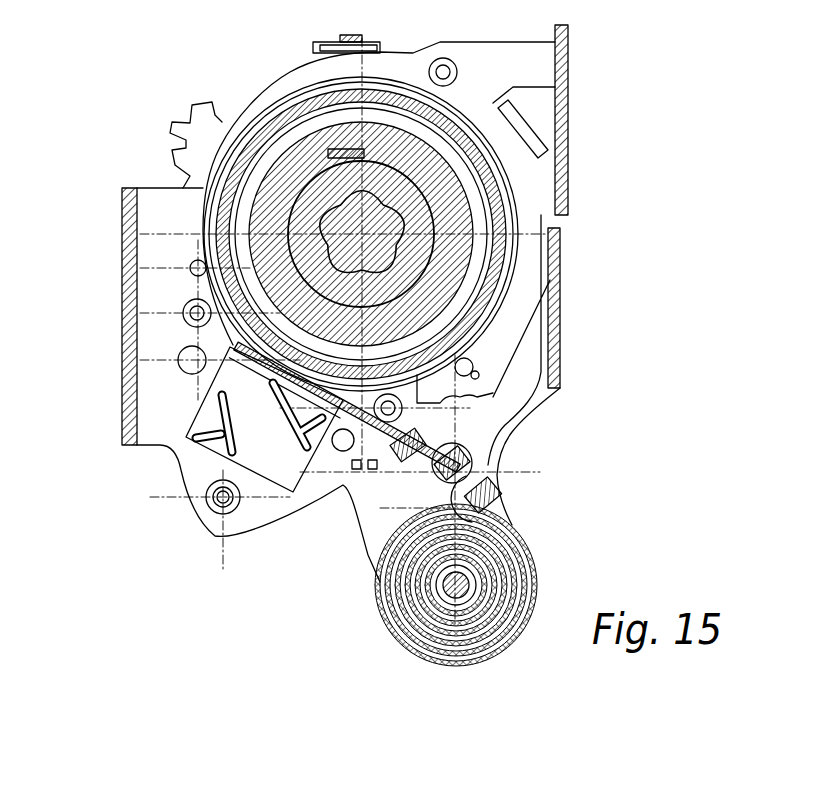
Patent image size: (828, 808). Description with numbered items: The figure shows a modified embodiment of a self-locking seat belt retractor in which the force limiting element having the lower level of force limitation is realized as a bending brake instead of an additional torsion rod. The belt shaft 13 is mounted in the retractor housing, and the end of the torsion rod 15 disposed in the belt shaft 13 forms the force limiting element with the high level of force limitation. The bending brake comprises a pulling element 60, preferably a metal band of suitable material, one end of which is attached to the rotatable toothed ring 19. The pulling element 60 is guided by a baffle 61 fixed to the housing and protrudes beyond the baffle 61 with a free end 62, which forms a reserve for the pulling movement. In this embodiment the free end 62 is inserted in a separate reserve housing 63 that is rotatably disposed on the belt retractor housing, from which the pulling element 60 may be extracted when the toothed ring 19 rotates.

The belt shaft 13 is at (410, 207).
The end of torsion rod 15 is at (470, 249).
The toothed ring 19 is at (483, 167).
The pulling element 60 is at (320, 394).
The baffle 61 is at (470, 462).
The free end 62 is at (500, 506).
The reserve housing 63 is at (533, 557).